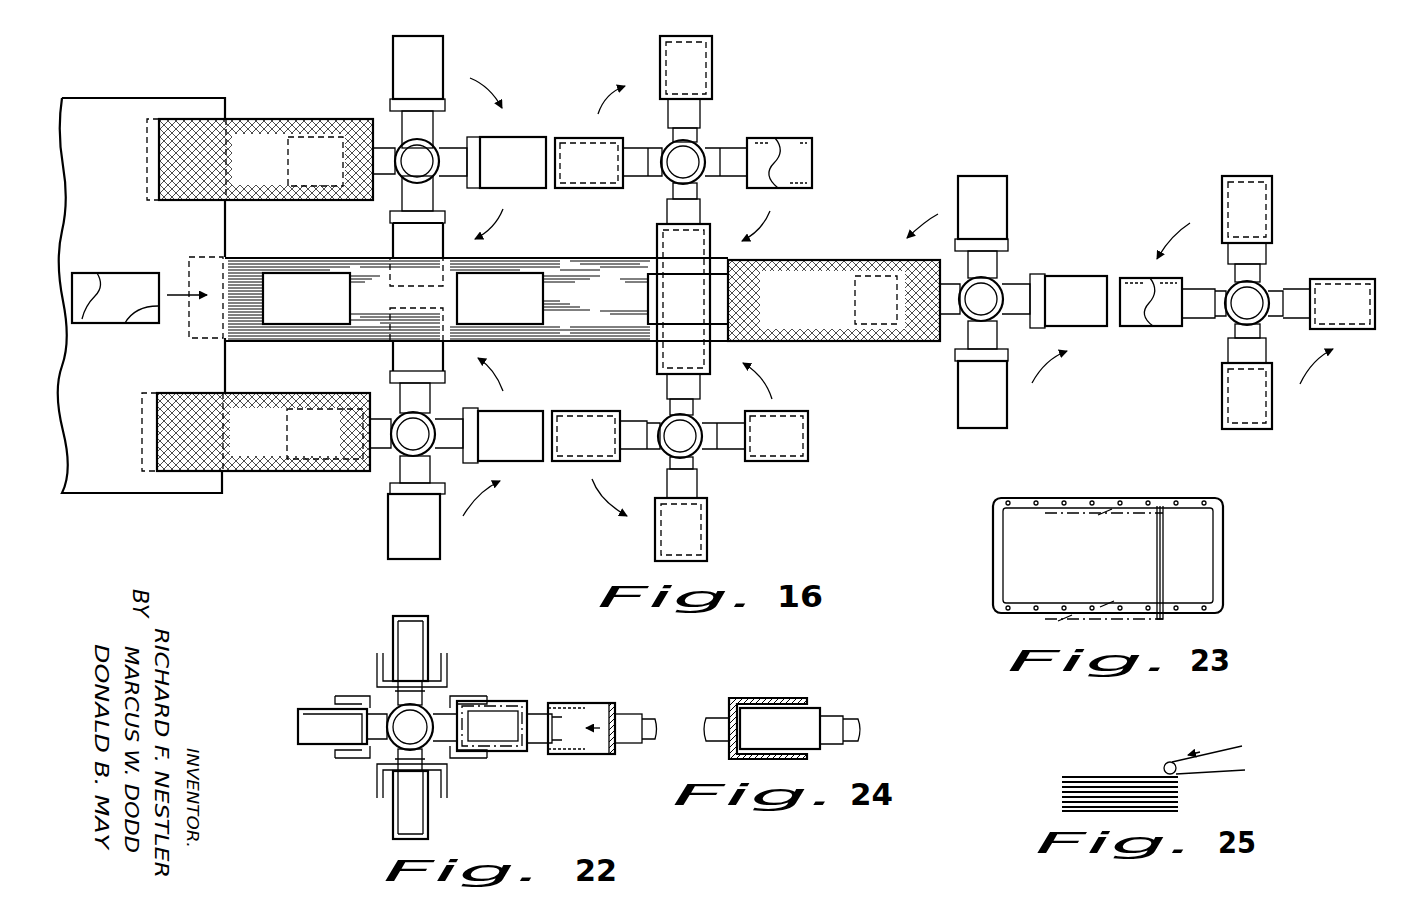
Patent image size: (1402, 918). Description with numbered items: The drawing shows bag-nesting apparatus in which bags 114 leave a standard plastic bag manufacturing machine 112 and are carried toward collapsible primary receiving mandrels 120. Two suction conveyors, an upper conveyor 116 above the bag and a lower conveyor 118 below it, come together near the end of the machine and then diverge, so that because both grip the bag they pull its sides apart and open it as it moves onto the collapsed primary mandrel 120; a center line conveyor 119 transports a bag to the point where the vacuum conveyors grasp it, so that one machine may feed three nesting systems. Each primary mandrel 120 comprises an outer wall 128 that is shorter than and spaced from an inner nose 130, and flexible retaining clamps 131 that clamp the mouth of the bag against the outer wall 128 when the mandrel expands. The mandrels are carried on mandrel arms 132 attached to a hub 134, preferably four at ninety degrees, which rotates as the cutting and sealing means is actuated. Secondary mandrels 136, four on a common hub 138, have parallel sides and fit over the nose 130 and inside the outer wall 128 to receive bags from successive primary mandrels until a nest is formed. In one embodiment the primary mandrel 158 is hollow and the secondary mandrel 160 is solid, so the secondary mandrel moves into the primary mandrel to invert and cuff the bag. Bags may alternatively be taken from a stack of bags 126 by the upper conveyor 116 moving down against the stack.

In FIG. 16, the plastic bag manufacturing machine 112 is at (138, 97).
In FIG. 16, the bag 114 is at (118, 246).
In FIG. 16, the upper conveyor 116 is at (285, 199).
In FIG. 25, the upper conveyor 116 is at (1225, 745).
In FIG. 16, the lower conveyor 118 is at (145, 148).
In FIG. 16, the center line conveyor 119 is at (597, 342).
In FIG. 16, the primary receiving mandrel 120 is at (330, 92).
In FIG. 23, the primary receiving mandrel 120 is at (1165, 497).
In FIG. 25, the stack of bags 126 is at (1090, 775).
In FIG. 22, the outer wall 128 is at (337, 760).
In FIG. 22, the inner nose 130 is at (298, 725).
In FIG. 22, the clamps 131 is at (513, 660).
In FIG. 16, the mandrel arms 132 is at (452, 390).
In FIG. 16, the hub 134 is at (408, 440).
In FIG. 16, the secondary mandrel 136 is at (593, 187).
In FIG. 22, the secondary mandrel 136 is at (590, 753).
In FIG. 16, the common hub 138 is at (690, 440).
In FIG. 24, the primary mandrel 158 is at (728, 703).
In FIG. 24, the secondary mandrel 160 is at (803, 717).